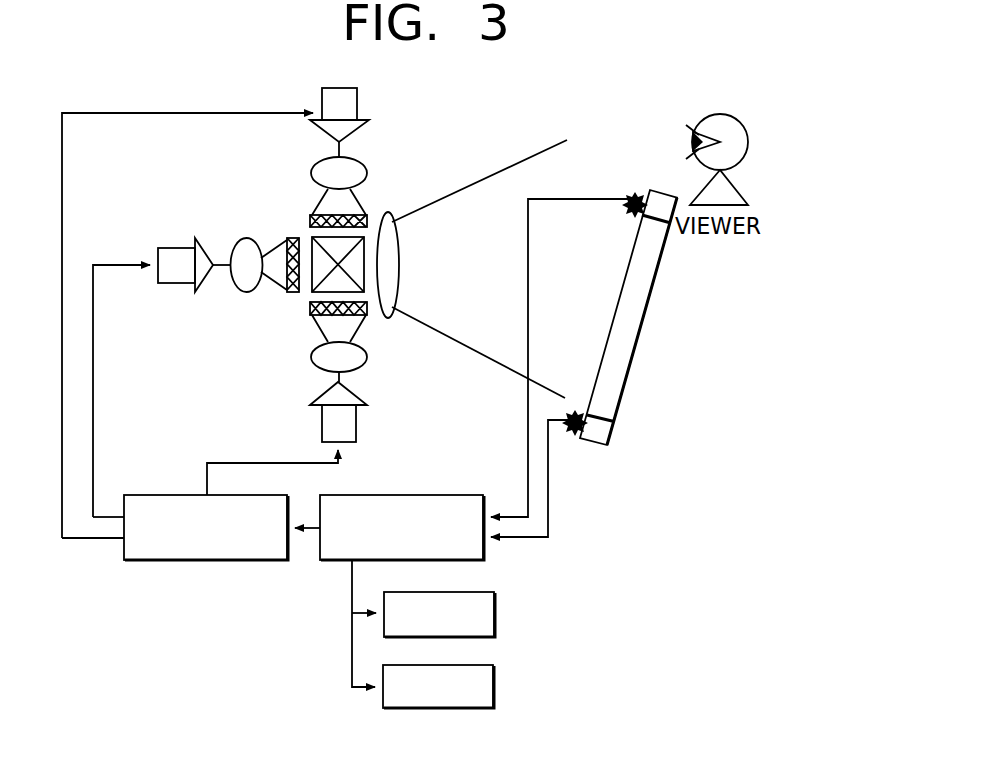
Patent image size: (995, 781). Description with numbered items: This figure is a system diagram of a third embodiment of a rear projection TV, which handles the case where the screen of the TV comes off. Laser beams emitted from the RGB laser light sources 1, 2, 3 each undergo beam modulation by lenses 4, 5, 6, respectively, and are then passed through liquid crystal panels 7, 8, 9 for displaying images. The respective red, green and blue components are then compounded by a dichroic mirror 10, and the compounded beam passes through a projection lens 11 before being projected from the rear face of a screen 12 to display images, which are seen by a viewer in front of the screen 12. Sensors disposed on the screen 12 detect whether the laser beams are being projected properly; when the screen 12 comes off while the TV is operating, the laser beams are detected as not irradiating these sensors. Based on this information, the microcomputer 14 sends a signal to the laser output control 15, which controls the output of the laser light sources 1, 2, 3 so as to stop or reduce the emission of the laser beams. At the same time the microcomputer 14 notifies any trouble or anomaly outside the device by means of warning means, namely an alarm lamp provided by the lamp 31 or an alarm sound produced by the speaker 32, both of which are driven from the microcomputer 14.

The red laser light source 1 is at (180, 247).
The green laser light source 2 is at (357, 105).
The blue laser light source 3 is at (356, 417).
The lens 4 is at (246, 238).
The lens 5 is at (356, 160).
The lens 6 is at (363, 364).
The liquid crystal panel 7 is at (292, 238).
The liquid crystal panel 8 is at (367, 215).
The liquid crystal panel 9 is at (367, 312).
The dichroic mirror 10 is at (332, 280).
The projection lens 11 is at (400, 257).
The screen 12 is at (593, 437).
The microcomputer 14 is at (422, 495).
The laser output control 15 is at (173, 495).
The lamp 31 is at (495, 612).
The speaker 32 is at (494, 686).